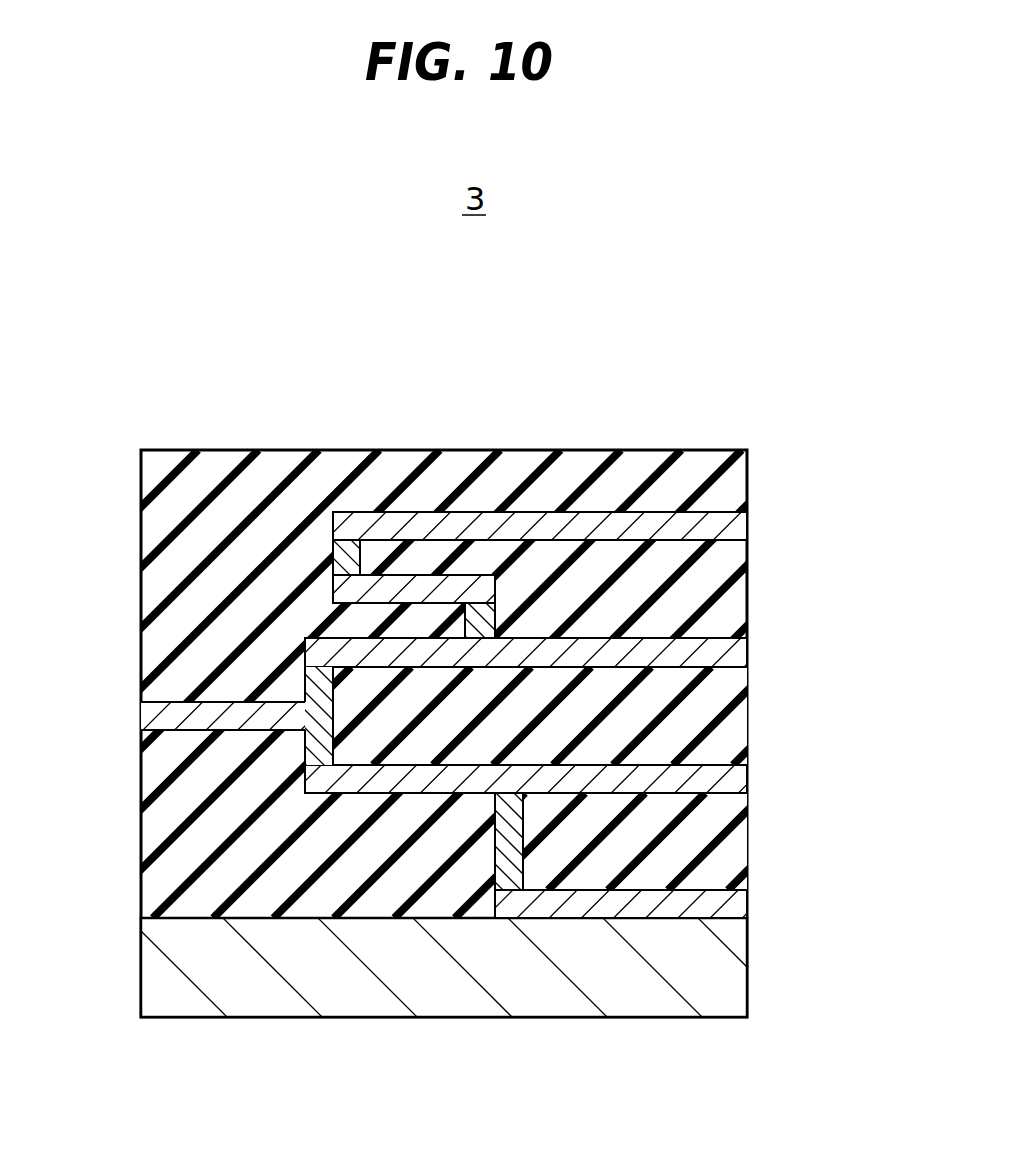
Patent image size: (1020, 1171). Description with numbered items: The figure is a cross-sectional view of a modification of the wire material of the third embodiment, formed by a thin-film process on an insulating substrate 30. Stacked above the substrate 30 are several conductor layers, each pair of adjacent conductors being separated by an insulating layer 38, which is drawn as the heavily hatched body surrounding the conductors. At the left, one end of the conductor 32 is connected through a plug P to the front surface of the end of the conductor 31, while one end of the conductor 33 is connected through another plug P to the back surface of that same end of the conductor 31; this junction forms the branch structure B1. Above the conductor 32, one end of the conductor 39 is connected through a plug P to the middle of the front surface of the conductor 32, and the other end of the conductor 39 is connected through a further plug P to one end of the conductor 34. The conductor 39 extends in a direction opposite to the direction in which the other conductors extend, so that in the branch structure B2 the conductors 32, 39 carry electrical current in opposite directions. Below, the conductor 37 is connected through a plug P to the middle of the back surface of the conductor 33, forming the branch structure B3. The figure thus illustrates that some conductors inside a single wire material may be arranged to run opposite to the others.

The substrate 30 is at (727, 978).
The conductor 31 is at (147, 713).
The conductor 32 is at (737, 652).
The conductor 33 is at (733, 777).
The conductor 34 is at (733, 527).
The conductor 37 is at (737, 903).
The insulating layer 38 is at (697, 463).
The conductor 39 is at (423, 590).
The plug P is at (347, 558).
The branch structure B1 is at (297, 760).
The branch structure B2 is at (506, 610).
The branch structure B3 is at (486, 863).